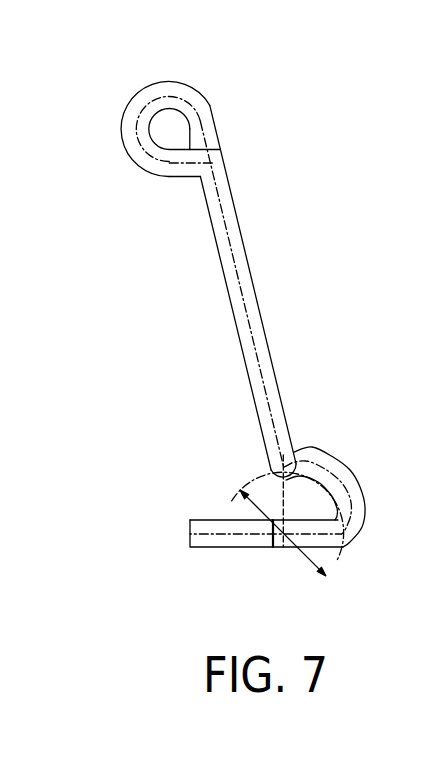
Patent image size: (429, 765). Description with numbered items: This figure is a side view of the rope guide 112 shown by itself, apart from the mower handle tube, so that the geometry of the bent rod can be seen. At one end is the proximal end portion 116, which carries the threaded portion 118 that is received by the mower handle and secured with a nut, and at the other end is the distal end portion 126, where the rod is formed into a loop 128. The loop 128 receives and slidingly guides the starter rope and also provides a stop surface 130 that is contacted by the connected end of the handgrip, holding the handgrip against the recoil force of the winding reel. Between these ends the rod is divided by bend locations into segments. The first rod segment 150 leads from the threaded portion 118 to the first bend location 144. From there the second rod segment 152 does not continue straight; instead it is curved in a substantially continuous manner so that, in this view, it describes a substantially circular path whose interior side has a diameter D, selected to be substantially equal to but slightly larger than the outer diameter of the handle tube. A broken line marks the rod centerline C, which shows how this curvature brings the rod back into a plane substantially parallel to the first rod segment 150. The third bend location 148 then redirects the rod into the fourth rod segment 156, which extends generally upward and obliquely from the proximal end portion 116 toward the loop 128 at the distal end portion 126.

The distal end portion 126 is at (145, 81).
The loop 128 is at (122, 134).
The stop surface 130 is at (174, 116).
The rope guide 112 is at (237, 187).
The fourth rod segment 156 is at (217, 246).
The rod centerline C is at (235, 258).
The third bend location 148 is at (270, 469).
The second rod segment 152 is at (355, 482).
The first bend location 144 is at (345, 547).
The proximal end portion 116 is at (223, 552).
The threaded portion 118 is at (190, 519).
The first rod segment 150 is at (277, 552).
The diameter D is at (309, 559).